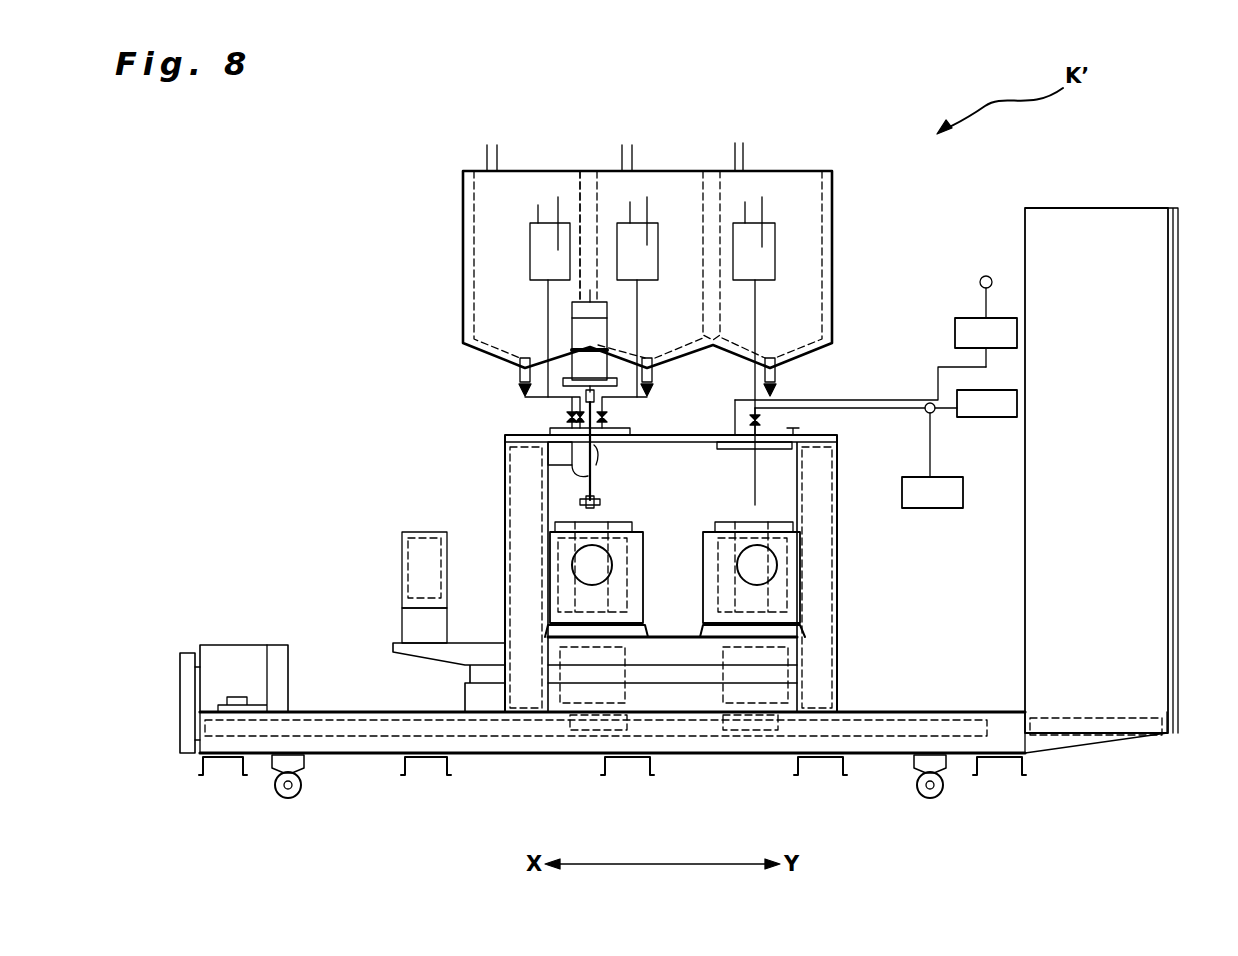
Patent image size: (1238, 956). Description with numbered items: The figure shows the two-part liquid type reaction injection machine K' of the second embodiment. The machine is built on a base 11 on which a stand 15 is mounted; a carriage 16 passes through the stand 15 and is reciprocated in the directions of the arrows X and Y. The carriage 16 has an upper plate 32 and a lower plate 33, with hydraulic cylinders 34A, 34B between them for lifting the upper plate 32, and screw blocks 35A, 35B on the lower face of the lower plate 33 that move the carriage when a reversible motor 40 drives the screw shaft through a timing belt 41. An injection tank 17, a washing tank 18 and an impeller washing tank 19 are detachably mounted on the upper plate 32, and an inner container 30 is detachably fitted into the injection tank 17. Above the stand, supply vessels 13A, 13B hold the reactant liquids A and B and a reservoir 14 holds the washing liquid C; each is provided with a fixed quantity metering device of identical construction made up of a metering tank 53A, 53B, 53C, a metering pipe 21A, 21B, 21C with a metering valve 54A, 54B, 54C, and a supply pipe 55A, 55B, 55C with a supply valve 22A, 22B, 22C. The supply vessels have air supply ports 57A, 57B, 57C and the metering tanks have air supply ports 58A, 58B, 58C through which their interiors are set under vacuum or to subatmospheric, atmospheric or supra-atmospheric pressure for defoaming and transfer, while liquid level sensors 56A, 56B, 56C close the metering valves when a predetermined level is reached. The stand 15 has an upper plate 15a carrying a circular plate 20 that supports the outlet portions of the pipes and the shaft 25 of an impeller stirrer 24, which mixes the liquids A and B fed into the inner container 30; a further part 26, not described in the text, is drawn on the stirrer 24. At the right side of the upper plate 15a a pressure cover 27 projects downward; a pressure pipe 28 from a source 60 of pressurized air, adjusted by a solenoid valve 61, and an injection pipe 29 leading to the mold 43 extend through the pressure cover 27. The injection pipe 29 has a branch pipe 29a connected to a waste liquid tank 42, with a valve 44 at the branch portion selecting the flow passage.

The base 11 is at (856, 745).
The supply vessel 13A is at (535, 185).
The supply vessel 13B is at (665, 182).
The reservoir 14 is at (800, 182).
The stand 15 is at (671, 573).
The upper plate 15a is at (705, 443).
The carriage 16 is at (388, 644).
The injection tank 17 is at (800, 545).
The washing tank 18 is at (630, 540).
The impeller washing tank 19 is at (450, 535).
The circular plate 20 is at (530, 397).
The metering pipe 21A is at (519, 368).
The metering pipe 21B is at (655, 372).
The metering pipe 21C is at (777, 362).
The supply valve 22A is at (568, 414).
The supply valve 22B is at (552, 430).
The supply valve 22C is at (608, 412).
The impeller stirrer 24 is at (572, 305).
The shaft 25 is at (588, 480).
The piston rod 26 is at (580, 345).
The pressure cover 27 is at (792, 408).
The pressure pipe 28 is at (757, 396).
The injection pipe 29 is at (802, 400).
The branch pipe 29a is at (935, 440).
The inner container 30 is at (770, 590).
The upper plate 32 is at (665, 640).
The lower plate 33 is at (697, 698).
The hydraulic cylinder 34A is at (545, 682).
The hydraulic cylinder 34B is at (788, 650).
The screw block 35A is at (627, 730).
The screw block 35B is at (783, 735).
The reversible motor 40 is at (245, 655).
The timing belt 41 is at (187, 712).
The waste liquid tank 42 is at (962, 506).
The mold 43 is at (978, 390).
The valve 44 is at (928, 413).
The metering tank 53A is at (530, 242).
The metering tank 53B is at (640, 222).
The metering tank 53C is at (777, 228).
The metering valve 54A is at (548, 362).
The metering valve 54B is at (645, 335).
The metering valve 54C is at (760, 335).
The supply pipe 55A is at (548, 448).
The supply pipe 55B is at (548, 460).
The supply pipe 55C is at (600, 445).
The liquid level sensor 56A is at (560, 200).
The liquid level sensor 56B is at (650, 200).
The liquid level sensor 56C is at (765, 205).
The air supply port 57A is at (490, 147).
The air supply port 57B is at (626, 147).
The air supply port 57C is at (740, 145).
The air supply port 58A is at (538, 210).
The air supply port 58B is at (630, 206).
The air supply port 58C is at (745, 205).
The source of pressurized air 60 is at (988, 277).
The solenoid valve 61 is at (955, 333).